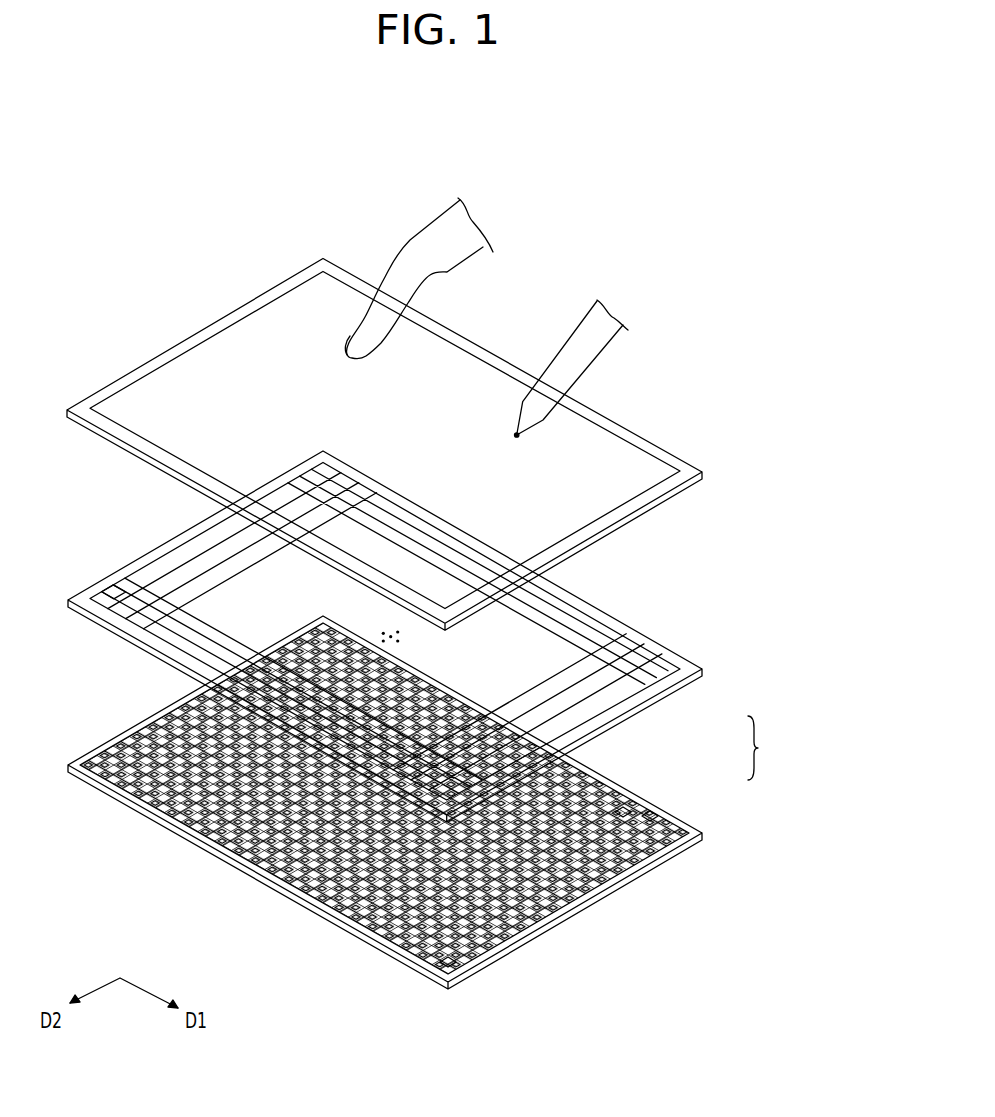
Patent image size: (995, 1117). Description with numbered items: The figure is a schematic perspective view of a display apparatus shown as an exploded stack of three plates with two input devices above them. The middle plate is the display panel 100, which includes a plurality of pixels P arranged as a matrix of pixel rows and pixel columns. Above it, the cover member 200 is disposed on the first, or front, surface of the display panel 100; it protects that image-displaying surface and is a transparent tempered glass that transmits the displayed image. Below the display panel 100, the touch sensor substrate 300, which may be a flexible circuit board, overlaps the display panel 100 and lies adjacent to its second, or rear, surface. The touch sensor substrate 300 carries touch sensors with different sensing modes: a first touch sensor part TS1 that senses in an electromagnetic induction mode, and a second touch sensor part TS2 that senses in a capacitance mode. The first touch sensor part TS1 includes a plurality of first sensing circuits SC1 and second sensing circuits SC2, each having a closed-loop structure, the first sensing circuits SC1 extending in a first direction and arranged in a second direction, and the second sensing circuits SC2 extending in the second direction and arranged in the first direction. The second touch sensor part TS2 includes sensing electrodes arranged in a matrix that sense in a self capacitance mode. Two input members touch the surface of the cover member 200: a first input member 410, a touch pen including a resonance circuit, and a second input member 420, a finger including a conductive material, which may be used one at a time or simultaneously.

The display panel 100 is at (703, 669).
The cover member 200 is at (703, 472).
The touch sensor substrate 300 is at (703, 833).
The first input member 410 is at (614, 318).
The second input member 420 is at (473, 222).
The pixel P is at (99, 593).
The first sensing circuit SC1 is at (650, 821).
The second sensing circuit SC2 is at (623, 817).
The first touch sensor part TS1 is at (771, 748).
The second touch sensor part TS2 is at (449, 966).